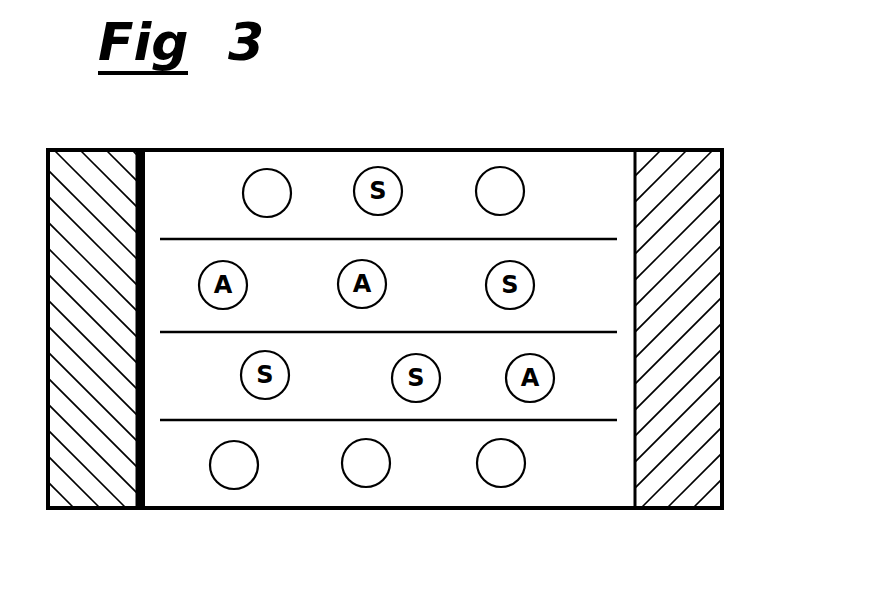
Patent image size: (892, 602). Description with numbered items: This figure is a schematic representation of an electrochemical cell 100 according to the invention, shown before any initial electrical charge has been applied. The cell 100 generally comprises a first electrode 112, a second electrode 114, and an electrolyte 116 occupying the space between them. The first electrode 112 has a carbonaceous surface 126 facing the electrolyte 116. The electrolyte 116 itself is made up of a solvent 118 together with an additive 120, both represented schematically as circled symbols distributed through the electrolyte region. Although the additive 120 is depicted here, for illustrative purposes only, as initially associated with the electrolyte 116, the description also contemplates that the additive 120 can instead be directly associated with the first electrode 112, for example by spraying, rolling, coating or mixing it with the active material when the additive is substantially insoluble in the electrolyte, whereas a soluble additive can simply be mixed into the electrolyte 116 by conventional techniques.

The electrochemical cell 100 is at (547, 107).
The first electrode 112 is at (87, 510).
The second electrode 114 is at (663, 510).
The electrolyte 116 is at (362, 487).
The solvent 118 is at (268, 171).
The additive 120 is at (497, 168).
The carbonaceous surface 126 is at (142, 148).